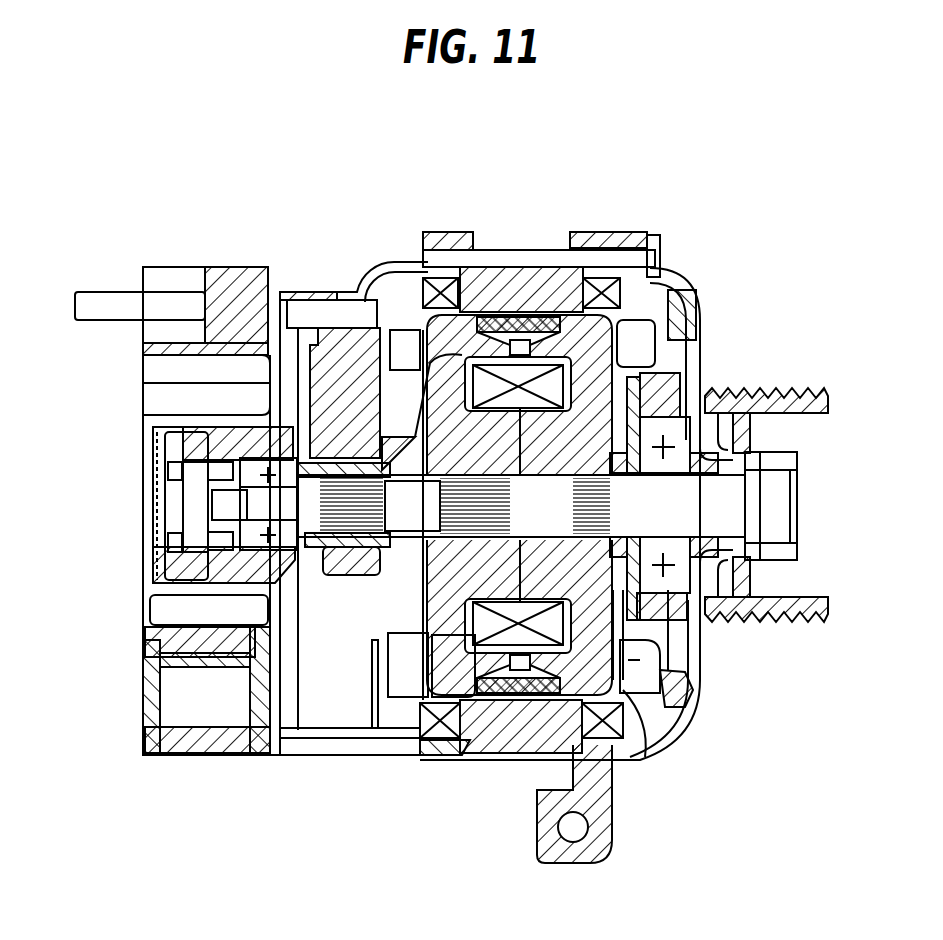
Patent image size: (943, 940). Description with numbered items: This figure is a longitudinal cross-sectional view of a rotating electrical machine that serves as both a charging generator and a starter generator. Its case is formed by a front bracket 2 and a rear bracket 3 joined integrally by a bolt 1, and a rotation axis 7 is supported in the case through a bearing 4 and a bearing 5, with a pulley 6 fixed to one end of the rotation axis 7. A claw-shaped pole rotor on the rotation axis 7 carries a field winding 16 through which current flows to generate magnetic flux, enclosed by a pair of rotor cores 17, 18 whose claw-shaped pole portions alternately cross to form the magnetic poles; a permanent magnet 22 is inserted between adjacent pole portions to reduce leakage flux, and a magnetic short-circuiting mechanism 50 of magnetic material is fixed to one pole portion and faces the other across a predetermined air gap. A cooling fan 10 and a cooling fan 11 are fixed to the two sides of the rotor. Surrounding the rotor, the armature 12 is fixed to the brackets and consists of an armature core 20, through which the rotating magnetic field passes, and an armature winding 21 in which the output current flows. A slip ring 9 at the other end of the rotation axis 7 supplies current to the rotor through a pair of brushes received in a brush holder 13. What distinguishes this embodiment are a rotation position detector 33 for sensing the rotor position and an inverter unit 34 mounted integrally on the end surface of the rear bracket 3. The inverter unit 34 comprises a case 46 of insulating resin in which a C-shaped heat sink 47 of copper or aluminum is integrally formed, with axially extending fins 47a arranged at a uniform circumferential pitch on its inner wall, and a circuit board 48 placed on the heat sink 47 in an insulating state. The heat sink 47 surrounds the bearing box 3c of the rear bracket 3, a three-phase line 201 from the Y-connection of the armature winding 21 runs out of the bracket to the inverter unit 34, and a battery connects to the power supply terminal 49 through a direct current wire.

The bolt 1 is at (657, 250).
The front bracket 2 is at (700, 315).
The rear bracket 3 is at (368, 296).
The bearing box 3c is at (195, 445).
The bearing 4 is at (685, 380).
The bearing 5 is at (285, 540).
The pulley 6 is at (808, 392).
The rotation axis 7 is at (740, 505).
The slip ring 9 is at (340, 556).
The cooling fan 10 is at (403, 332).
The cooling fan 11 is at (640, 330).
The armature 12 is at (535, 287).
The brush holder 13 is at (330, 325).
The field winding 16 is at (652, 628).
The rotor core 17 is at (455, 682).
The rotor core 18 is at (618, 700).
The armature core 20 is at (492, 280).
The armature winding 21 is at (443, 280).
The permanent magnet 22 is at (515, 695).
The rotation position detector 33 is at (190, 548).
The inverter unit 34 is at (150, 262).
The case 46 is at (236, 262).
The heat sink 47 is at (141, 362).
The fins 47a is at (150, 400).
The circuit board 48 is at (160, 657).
The power supply terminal 49 is at (108, 300).
The magnetic short-circuiting mechanism 50 is at (673, 677).
The three-phase line 201 is at (300, 740).